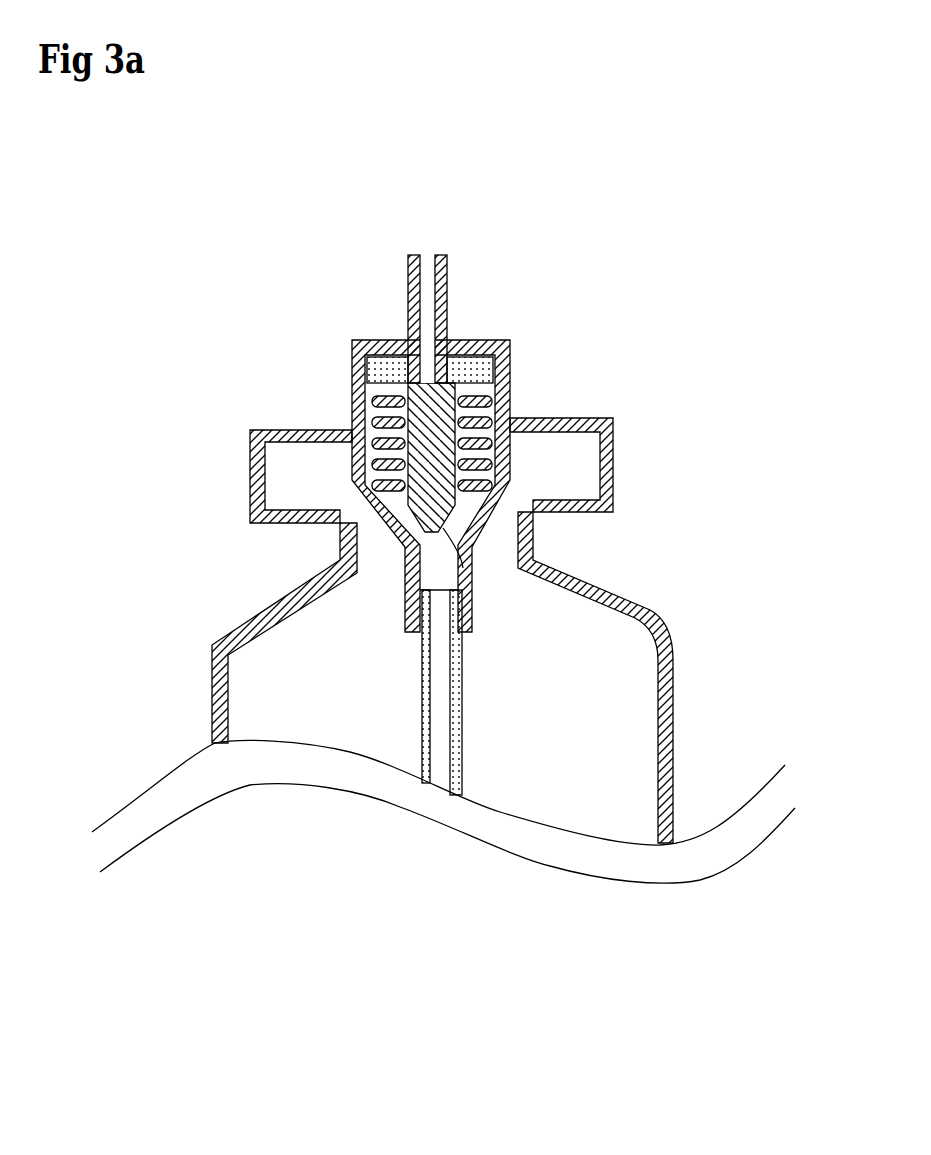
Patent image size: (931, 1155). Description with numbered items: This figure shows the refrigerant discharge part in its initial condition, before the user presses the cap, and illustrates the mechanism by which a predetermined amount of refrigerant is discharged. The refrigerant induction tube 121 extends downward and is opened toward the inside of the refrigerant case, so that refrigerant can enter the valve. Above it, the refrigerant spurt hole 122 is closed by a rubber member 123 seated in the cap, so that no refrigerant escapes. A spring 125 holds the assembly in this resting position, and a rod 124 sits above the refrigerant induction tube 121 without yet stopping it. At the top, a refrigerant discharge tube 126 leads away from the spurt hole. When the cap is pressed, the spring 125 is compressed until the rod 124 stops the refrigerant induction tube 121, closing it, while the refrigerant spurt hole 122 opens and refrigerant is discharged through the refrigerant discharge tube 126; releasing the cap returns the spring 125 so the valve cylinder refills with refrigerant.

The refrigerant induction tube 121 is at (440, 783).
The refrigerant spurt hole 122 is at (435, 365).
The rubber member 123 is at (385, 345).
The rod 124 is at (470, 568).
The spring 125 is at (362, 482).
The refrigerant discharge tube 126 is at (425, 262).